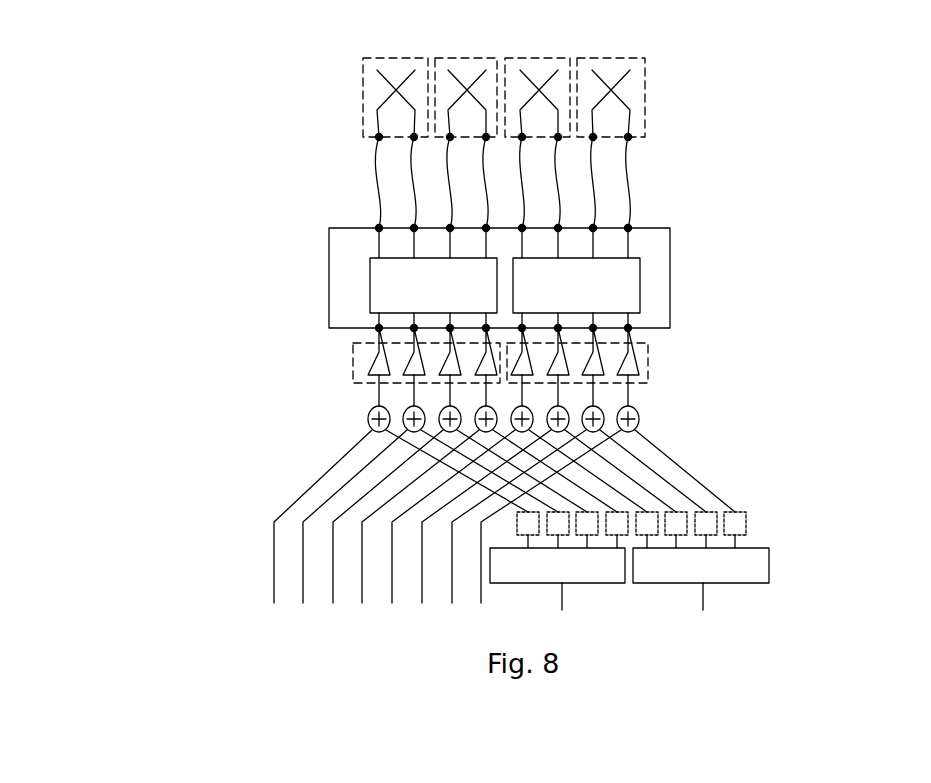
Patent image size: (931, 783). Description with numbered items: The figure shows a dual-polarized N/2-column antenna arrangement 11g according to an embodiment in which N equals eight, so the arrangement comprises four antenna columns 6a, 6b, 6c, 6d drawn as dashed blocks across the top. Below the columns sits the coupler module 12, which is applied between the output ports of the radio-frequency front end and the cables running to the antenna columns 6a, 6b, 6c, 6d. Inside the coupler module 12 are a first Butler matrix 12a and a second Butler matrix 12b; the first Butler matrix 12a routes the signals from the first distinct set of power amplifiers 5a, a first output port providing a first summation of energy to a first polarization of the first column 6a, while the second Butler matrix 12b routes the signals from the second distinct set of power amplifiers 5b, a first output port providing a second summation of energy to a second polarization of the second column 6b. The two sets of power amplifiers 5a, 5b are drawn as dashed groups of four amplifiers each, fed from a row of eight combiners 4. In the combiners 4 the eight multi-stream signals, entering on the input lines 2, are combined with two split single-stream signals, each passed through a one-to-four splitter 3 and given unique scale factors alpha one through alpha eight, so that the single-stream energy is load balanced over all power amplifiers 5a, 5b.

The dual-polarized N/2-column antenna arrangement 11g is at (208, 86).
The antenna column 6a is at (363, 95).
The antenna column 6b is at (645, 100).
The antenna column 6c is at (467, 57).
The antenna column 6d is at (548, 58).
The coupler module 12 is at (492, 275).
The first N/2×N/2 Butler matrix 12a is at (370, 290).
The second N/2×N/2 Butler matrix 12b is at (640, 280).
The first distinct set of power amplifiers 5a is at (353, 358).
The second distinct set of power amplifiers 5b is at (648, 368).
The combiners 4 is at (368, 414).
The input signal lines 2 is at (274, 580).
The demultiplexer output 3 is at (704, 592).